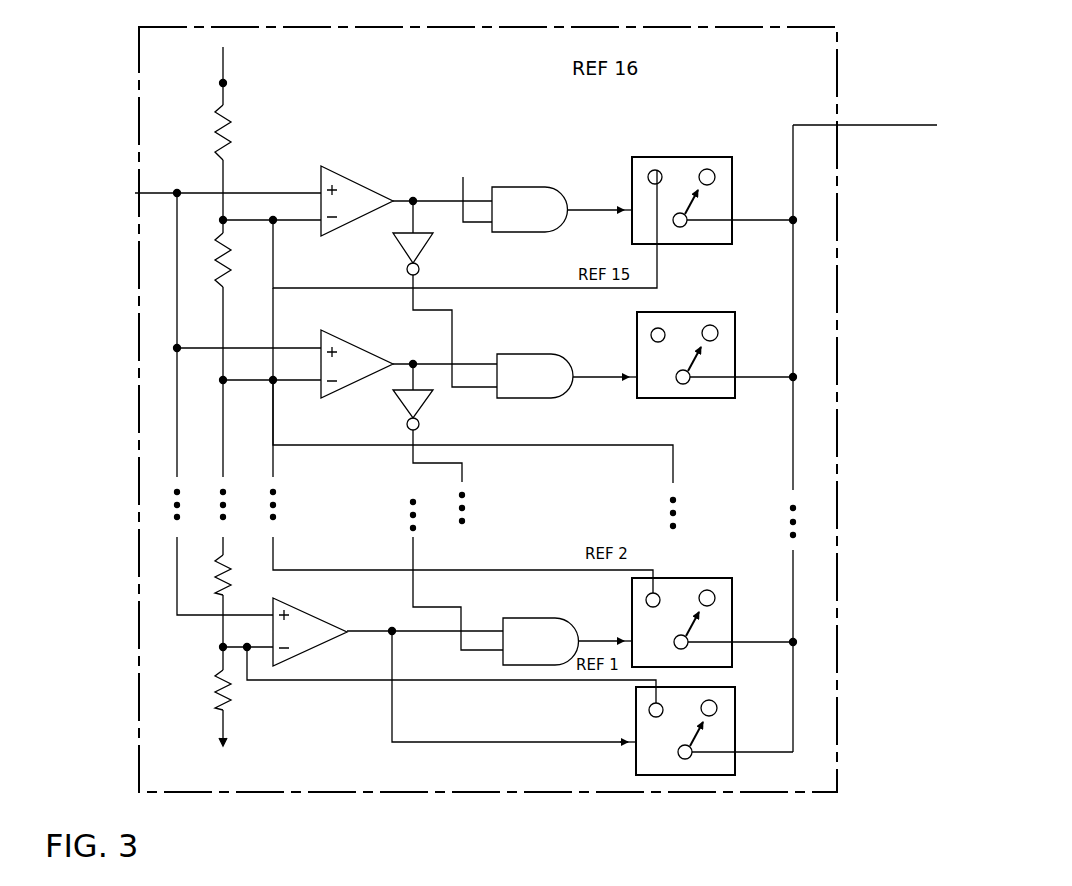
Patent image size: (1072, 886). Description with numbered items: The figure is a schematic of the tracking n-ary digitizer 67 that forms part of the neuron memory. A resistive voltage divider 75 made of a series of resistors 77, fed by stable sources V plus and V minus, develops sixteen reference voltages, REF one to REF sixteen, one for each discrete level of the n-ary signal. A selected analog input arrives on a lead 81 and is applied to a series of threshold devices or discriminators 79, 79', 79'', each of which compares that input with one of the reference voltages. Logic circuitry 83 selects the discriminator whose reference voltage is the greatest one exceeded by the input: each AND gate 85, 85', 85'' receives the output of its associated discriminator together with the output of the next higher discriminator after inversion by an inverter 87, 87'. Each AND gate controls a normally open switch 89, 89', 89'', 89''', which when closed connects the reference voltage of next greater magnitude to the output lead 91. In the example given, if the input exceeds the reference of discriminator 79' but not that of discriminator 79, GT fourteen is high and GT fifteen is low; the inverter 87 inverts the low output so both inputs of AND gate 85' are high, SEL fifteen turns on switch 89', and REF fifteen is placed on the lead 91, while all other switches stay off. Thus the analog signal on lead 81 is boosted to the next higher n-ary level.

The tracking n-ary digitizer 67 is at (840, 318).
The resistive voltage divider 75 is at (204, 98).
The resistor 77 is at (232, 136).
The threshold device (discriminator) 79 is at (406, 198).
The discriminator 79' is at (409, 359).
The discriminator 79'' is at (454, 666).
The lead 81 is at (148, 191).
The logic circuitry 83 is at (514, 182).
The AND gate 85 is at (562, 199).
The AND gate 85' is at (567, 363).
The AND gate 85'' is at (567, 630).
The inverter 87 is at (445, 294).
The inverter 87' is at (429, 444).
The switch 89 is at (712, 184).
The switch 89' is at (715, 339).
The switch 89'' is at (712, 608).
The switch 89''' is at (714, 725).
The output lead 91 is at (862, 125).